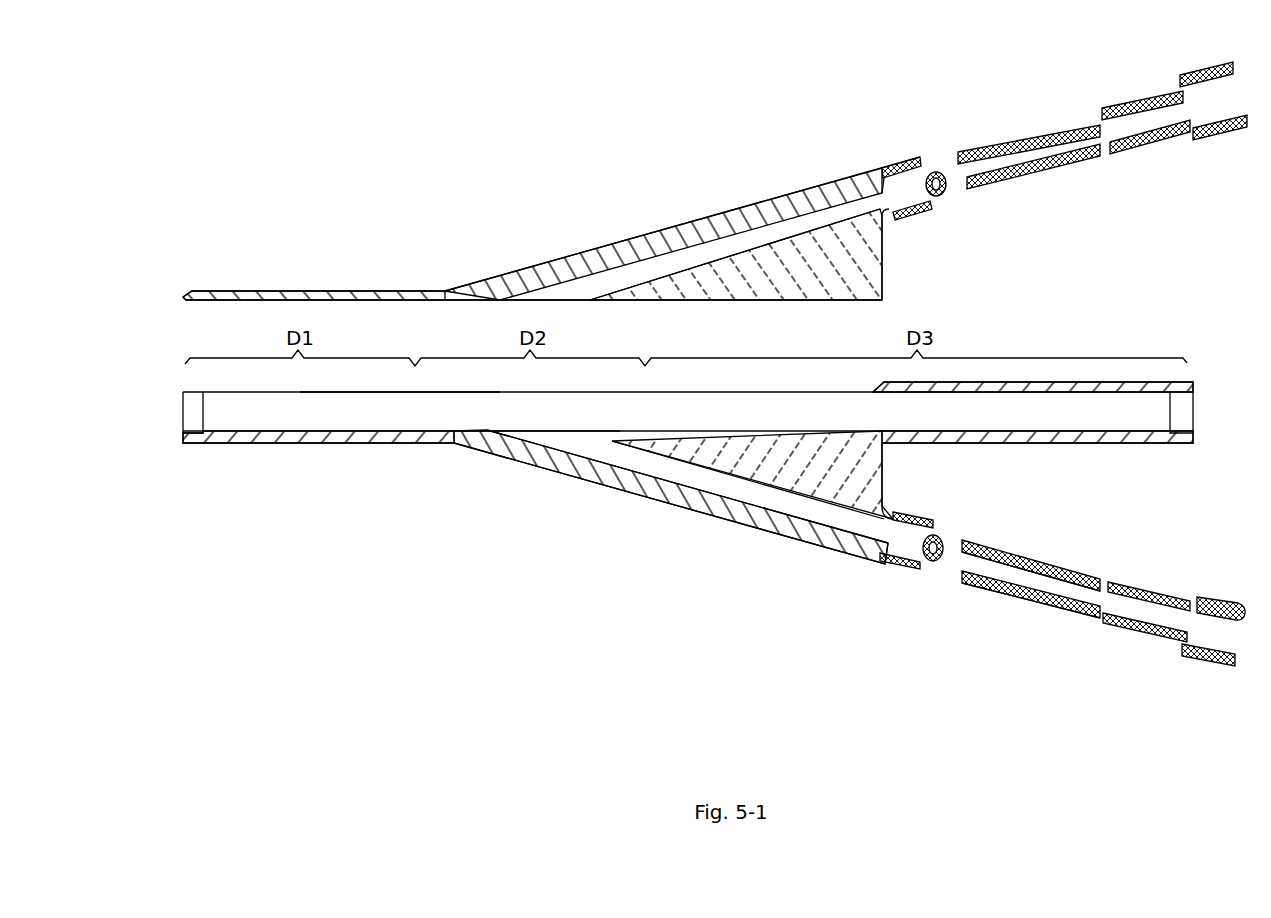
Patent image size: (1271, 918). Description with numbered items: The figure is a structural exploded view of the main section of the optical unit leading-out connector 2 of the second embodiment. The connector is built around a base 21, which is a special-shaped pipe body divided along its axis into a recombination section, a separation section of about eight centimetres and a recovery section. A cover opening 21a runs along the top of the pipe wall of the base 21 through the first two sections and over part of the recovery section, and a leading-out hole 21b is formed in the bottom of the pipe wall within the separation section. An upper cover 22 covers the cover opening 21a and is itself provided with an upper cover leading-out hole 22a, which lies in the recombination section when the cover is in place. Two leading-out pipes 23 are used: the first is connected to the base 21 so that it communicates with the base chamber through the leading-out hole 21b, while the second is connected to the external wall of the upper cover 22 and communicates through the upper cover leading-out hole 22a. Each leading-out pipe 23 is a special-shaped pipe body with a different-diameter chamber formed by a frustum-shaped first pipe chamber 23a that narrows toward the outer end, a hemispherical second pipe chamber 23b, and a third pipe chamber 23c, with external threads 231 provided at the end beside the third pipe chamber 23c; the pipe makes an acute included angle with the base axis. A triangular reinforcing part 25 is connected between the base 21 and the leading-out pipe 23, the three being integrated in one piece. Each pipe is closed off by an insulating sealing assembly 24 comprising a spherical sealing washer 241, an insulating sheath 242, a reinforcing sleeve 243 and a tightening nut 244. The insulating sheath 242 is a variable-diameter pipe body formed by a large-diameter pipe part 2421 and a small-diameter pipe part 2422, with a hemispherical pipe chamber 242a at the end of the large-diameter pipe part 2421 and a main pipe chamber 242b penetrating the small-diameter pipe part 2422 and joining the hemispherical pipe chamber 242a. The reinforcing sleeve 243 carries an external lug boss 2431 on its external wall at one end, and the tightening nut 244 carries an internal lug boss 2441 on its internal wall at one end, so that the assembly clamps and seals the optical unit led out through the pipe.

The optical unit leading-out connector 2 is at (276, 130).
The base 21 is at (246, 450).
The cover opening 21a is at (387, 402).
The leading-out hole 21b is at (548, 438).
The upper cover 22 is at (334, 288).
The upper cover leading-out hole 22a is at (559, 291).
The leading-out pipe 23 is at (687, 232).
The first pipe chamber 23a is at (670, 480).
The second pipe chamber 23b is at (880, 542).
The third pipe chamber 23c is at (905, 545).
The external threads 231 is at (924, 510).
The insulating sealing assembly 24 is at (927, 722).
The spherical sealing washer 241 is at (940, 203).
The insulating sheath 242 is at (1035, 178).
The hemispherical pipe chamber 242a is at (963, 546).
The main pipe chamber 242b is at (1033, 571).
The large-diameter pipe part 2421 is at (978, 585).
The small-diameter pipe part 2422 is at (1055, 606).
The reinforcing sleeve 243 is at (1147, 152).
The external lug boss 2431 is at (1119, 574).
The tightening nut 244 is at (1217, 148).
The internal lug boss 2441 is at (1223, 614).
The triangular reinforcing part 25 is at (832, 262).